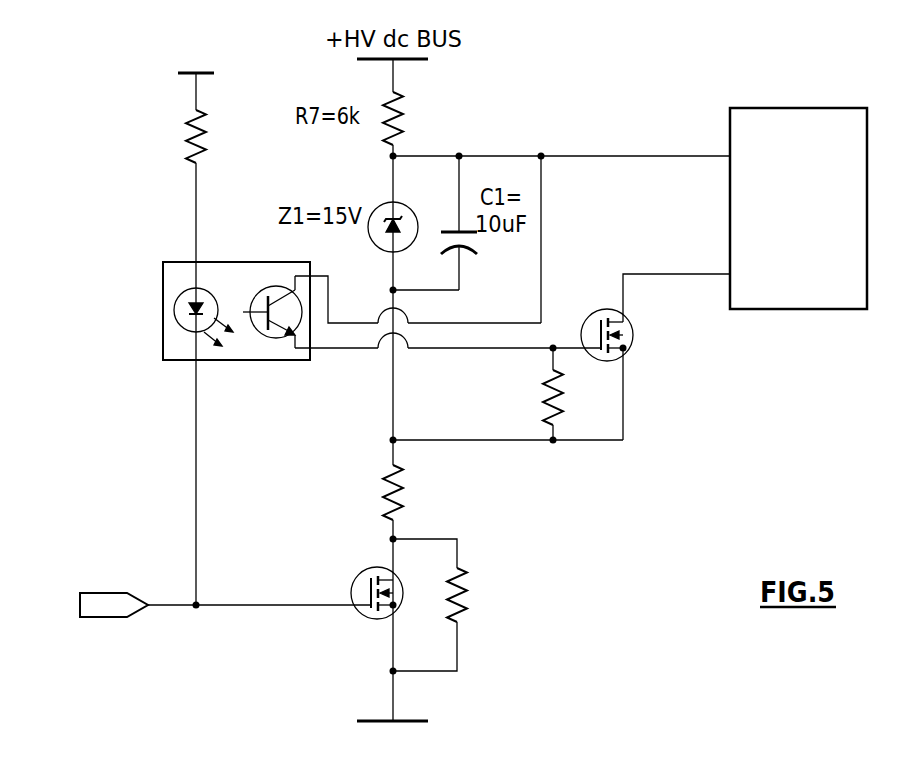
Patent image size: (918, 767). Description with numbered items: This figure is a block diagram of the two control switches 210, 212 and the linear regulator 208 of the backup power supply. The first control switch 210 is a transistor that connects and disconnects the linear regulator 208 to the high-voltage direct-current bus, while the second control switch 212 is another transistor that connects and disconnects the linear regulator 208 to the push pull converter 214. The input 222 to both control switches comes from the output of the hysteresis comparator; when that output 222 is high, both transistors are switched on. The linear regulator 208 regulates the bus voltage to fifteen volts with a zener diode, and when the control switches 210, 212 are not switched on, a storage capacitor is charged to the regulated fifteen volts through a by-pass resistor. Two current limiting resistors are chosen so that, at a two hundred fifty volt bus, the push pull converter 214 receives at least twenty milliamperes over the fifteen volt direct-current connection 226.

The linear regulator 208 is at (116, 176).
The input of the control switches 222 is at (90, 593).
The 15 Vdc connection 226 is at (663, 155).
The push pull converter 214 is at (854, 299).
The control switch 212 is at (703, 505).
The control switch 210 is at (634, 605).